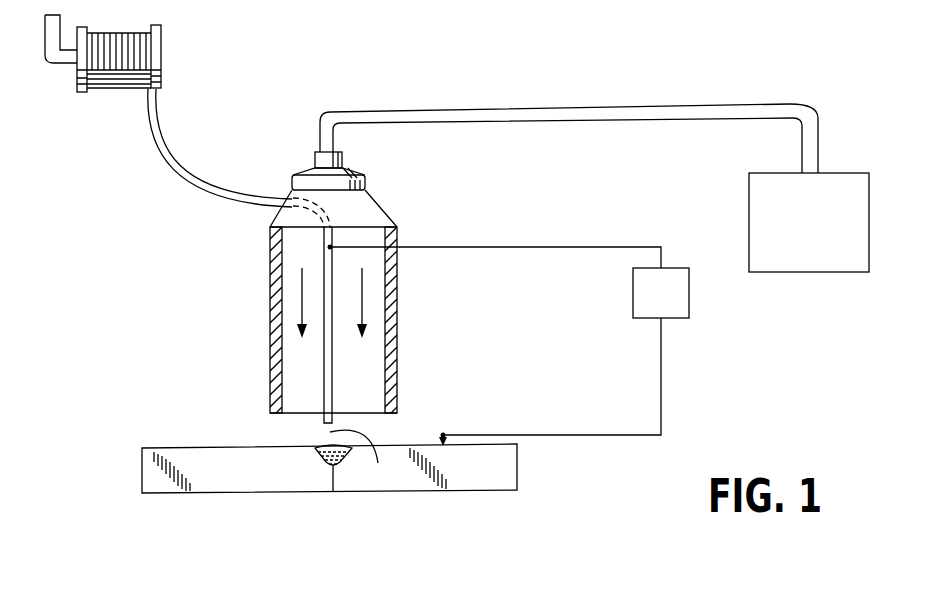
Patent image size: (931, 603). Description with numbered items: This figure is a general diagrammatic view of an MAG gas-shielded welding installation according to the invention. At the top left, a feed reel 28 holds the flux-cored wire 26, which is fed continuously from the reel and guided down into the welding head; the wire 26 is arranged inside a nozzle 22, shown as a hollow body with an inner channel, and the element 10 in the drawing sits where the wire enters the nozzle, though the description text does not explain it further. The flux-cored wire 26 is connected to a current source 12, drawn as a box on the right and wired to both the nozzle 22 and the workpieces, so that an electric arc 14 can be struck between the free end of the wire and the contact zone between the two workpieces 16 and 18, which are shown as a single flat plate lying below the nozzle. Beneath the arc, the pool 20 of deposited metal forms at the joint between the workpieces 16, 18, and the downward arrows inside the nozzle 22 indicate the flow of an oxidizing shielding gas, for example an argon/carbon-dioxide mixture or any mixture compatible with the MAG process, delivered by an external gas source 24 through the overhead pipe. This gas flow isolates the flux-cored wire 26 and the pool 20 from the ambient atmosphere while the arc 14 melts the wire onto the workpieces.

The hose/tube end with sensor point 10 is at (323, 243).
The current source 12 is at (689, 301).
The electric arc 14 is at (360, 461).
The workpiece 16 is at (217, 494).
The workpiece 18 is at (400, 492).
The pool of deposited metal 20 is at (323, 458).
The nozzle 22 is at (272, 303).
The external gas source 24 is at (749, 214).
The flux-cored wire 26 is at (165, 145).
The feed reel 28 is at (89, 106).